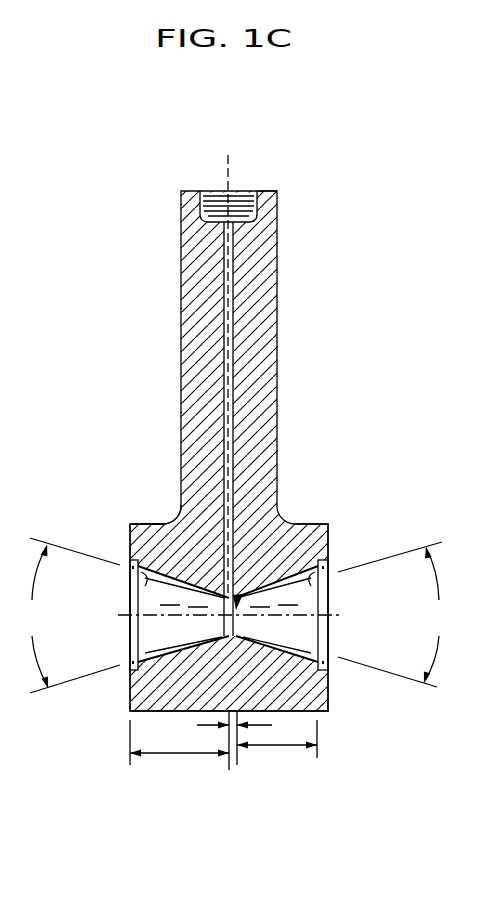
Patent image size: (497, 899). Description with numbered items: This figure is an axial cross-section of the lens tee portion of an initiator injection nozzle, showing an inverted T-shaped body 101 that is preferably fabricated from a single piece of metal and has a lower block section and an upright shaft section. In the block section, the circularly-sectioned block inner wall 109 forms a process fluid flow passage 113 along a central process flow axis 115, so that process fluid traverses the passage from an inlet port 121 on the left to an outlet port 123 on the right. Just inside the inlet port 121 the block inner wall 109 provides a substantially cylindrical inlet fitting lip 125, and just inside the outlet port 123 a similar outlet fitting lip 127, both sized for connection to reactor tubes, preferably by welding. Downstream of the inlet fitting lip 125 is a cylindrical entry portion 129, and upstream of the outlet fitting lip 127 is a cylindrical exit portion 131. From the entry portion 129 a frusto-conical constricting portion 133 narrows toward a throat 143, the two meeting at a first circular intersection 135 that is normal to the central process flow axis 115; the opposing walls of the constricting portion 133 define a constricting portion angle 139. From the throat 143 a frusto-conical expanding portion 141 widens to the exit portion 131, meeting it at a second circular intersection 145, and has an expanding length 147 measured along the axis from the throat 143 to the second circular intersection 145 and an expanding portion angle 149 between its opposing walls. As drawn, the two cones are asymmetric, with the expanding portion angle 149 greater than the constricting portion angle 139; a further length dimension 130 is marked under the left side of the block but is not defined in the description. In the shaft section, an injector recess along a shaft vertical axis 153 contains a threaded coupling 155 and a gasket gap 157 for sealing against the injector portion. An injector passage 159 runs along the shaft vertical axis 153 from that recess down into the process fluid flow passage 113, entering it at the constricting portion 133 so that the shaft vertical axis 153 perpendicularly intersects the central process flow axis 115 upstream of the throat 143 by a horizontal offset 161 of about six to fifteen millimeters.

The body 101 is at (181, 310).
The block inner wall 109 is at (322, 524).
The process fluid flow passage 113 is at (173, 572).
The central process flow axis 115 is at (230, 620).
The inlet port 121 is at (128, 600).
The outlet port 123 is at (330, 597).
The inlet fitting lip 125 is at (130, 685).
The outlet fitting lip 127 is at (328, 688).
The entry portion 129 is at (128, 578).
The left cavity length 130 is at (179, 753).
The exit portion 131 is at (333, 570).
The constricting portion 133 is at (181, 645).
The first circular intersection 135 is at (128, 648).
The constricting portion angle 139 is at (62, 615).
The expanding portion 141 is at (315, 645).
The throat 143 is at (246, 592).
The second circular intersection 145 is at (330, 636).
The expanding length 147 is at (277, 748).
The expanding portion angle 149 is at (397, 614).
The shaft vertical axis 153 is at (226, 172).
The threaded coupling 155 is at (185, 205).
The gasket gap 157 is at (276, 192).
The injector passage 159 is at (234, 340).
The horizontal offset 161 is at (217, 740).